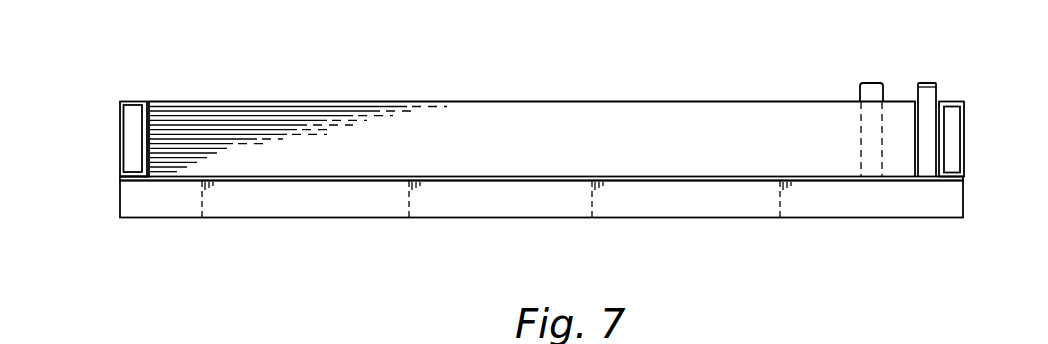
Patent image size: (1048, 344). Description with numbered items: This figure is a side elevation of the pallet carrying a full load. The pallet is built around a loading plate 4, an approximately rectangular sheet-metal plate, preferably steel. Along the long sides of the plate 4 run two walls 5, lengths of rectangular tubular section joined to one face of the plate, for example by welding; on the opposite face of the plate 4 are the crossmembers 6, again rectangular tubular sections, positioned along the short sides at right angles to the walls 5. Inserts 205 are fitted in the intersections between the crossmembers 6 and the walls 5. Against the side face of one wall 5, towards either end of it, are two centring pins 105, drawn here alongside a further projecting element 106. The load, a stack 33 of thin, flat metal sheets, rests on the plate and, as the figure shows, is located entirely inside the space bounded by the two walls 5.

The loading plate 4 is at (344, 177).
The walls 5 is at (119, 113).
The crossmembers 6 is at (150, 212).
The stack of metal sheets 33 is at (645, 110).
The centring pins 105 is at (938, 91).
The rod 106 is at (870, 84).
The inserts 205 is at (120, 179).